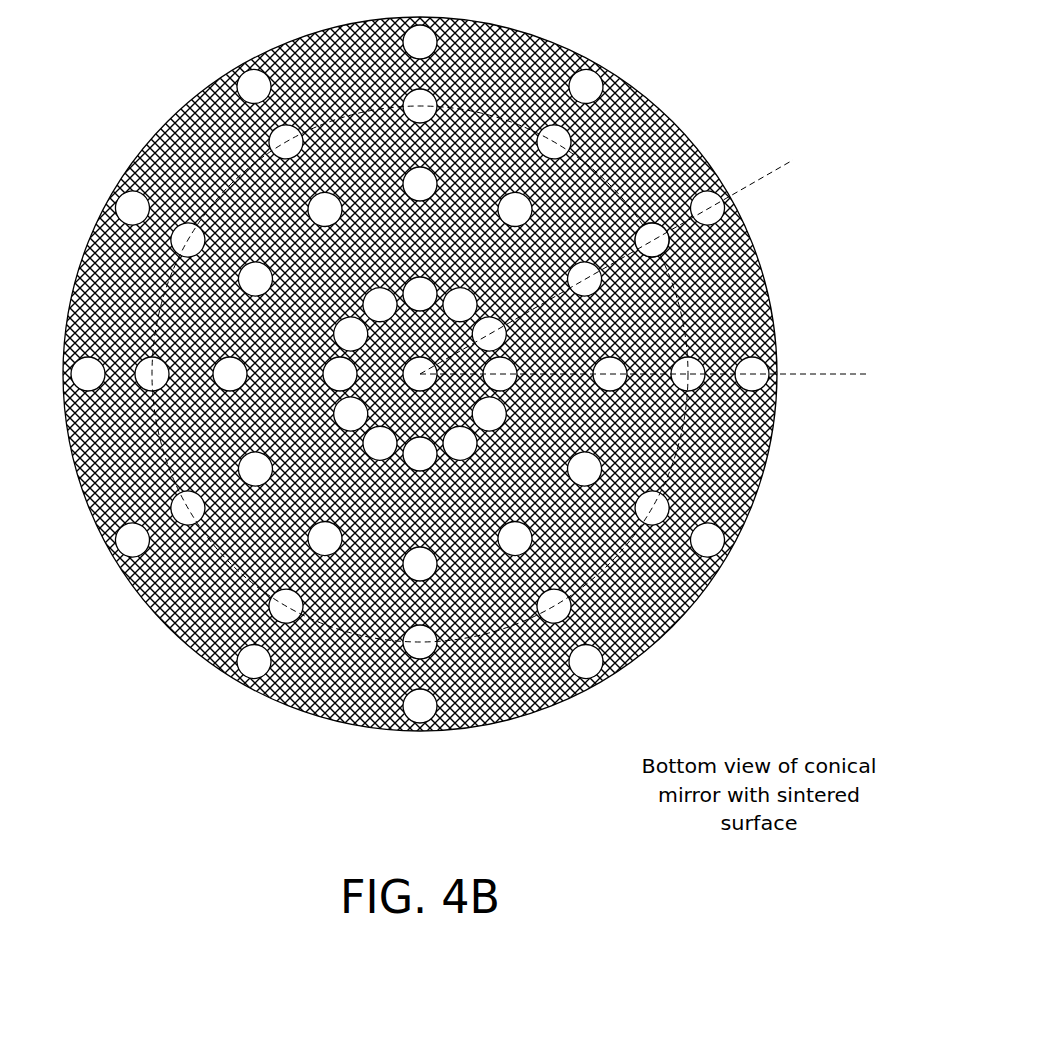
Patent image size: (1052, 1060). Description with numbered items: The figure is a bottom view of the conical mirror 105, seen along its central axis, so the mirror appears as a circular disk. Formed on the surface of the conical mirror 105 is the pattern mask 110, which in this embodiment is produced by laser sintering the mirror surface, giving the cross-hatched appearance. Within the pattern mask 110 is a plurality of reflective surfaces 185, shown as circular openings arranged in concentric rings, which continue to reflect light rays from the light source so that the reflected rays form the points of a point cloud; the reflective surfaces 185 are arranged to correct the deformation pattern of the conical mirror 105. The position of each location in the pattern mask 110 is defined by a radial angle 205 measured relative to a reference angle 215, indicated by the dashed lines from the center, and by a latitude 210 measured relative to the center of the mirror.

The conical mirror 105 is at (470, 374).
The pattern mask 110 is at (393, 374).
The reflective surfaces 185 is at (652, 240).
The radial angle λ1 205 is at (763, 177).
The latitude λ2 210 is at (765, 283).
The reference angle λ0 215 is at (827, 374).